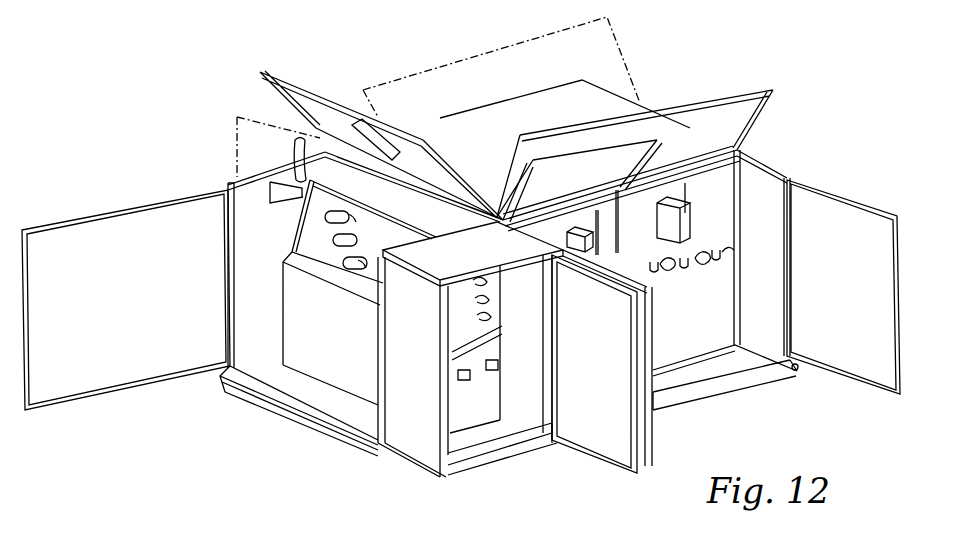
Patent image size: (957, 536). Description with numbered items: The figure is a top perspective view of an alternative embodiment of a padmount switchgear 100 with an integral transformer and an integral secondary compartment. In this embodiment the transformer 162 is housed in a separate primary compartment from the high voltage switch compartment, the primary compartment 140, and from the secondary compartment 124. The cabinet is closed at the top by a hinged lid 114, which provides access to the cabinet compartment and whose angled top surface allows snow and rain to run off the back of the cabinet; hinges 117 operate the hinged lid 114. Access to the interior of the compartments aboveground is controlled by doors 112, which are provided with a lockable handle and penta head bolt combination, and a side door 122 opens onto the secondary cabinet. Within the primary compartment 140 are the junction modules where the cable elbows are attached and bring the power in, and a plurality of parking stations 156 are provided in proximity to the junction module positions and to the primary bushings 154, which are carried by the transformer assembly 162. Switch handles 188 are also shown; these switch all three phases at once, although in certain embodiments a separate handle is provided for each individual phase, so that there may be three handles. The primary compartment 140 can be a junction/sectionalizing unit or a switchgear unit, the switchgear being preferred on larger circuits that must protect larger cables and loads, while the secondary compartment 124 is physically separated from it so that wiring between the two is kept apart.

The storage container assembly 100 is at (655, 63).
The hinged lid 114 is at (315, 92).
The hinges 117 is at (293, 157).
The doors 112 is at (132, 317).
The side door 122 is at (611, 360).
The secondary compartment 124 is at (490, 429).
The transformer assembly 162 is at (310, 328).
The primary compartment 140 is at (724, 356).
The primary bushings 154 is at (677, 283).
The parking stations 156 is at (727, 252).
The switch handles 188 is at (687, 233).